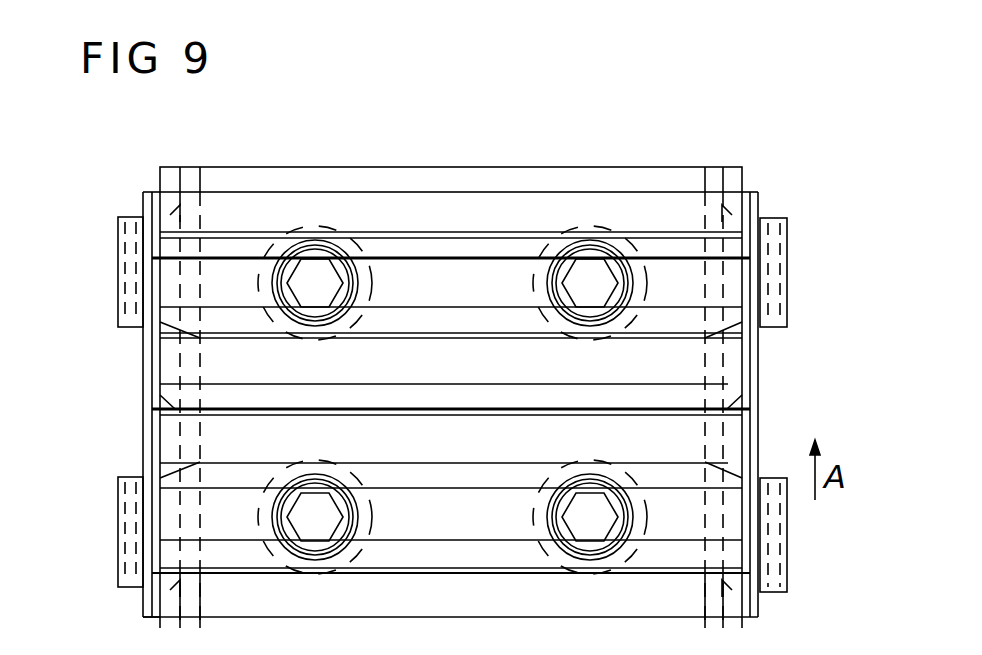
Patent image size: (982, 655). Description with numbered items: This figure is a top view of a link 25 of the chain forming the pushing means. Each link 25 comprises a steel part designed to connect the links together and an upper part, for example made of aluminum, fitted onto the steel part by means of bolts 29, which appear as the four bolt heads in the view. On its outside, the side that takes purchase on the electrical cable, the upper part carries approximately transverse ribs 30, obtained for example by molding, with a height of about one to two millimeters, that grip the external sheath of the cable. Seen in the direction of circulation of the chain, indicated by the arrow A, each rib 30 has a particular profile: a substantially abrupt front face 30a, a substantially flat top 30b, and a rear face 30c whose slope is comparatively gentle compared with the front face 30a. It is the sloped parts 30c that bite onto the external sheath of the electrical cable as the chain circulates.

The link 25 is at (663, 144).
The bolts 29 is at (588, 280).
The transverse ribs 30 is at (170, 397).
The front face 30a is at (757, 333).
The top 30b is at (220, 353).
The rear face 30c is at (225, 447).